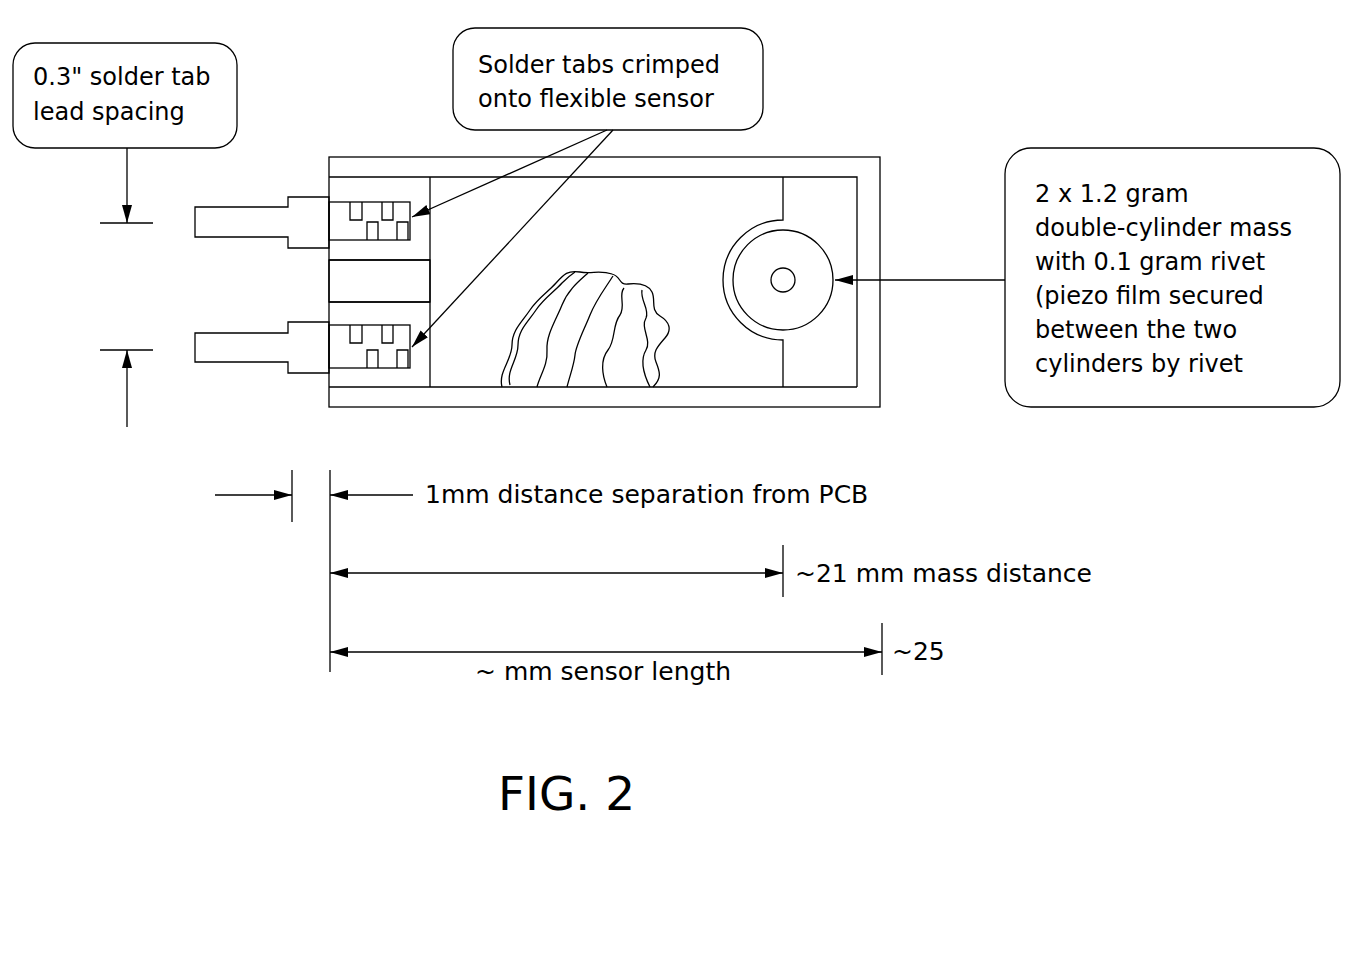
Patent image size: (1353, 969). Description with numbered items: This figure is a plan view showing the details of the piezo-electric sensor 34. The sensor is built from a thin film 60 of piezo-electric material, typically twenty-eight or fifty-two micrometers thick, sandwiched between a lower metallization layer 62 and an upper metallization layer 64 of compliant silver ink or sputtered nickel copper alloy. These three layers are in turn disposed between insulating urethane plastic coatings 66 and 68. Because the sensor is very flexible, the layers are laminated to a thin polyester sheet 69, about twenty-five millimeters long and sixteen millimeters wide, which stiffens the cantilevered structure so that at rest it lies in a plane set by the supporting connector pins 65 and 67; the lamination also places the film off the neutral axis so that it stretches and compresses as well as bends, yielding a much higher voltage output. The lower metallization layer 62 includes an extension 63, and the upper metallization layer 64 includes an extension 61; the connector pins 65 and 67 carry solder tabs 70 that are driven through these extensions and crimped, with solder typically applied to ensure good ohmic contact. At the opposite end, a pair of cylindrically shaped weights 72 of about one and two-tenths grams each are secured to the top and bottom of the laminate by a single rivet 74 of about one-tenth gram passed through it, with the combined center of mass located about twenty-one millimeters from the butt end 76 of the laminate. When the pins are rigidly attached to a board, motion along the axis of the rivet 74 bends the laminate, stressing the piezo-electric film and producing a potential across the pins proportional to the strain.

The piezo-electric sensor 34 is at (790, 157).
The extension of upper metallization layer 61 is at (375, 177).
The solder tabs 70 is at (352, 218).
The connector pin 65 is at (258, 240).
The butt end of the laminate 76 is at (329, 287).
The connector pin 67 is at (258, 364).
The extension of lower metallization layer 63 is at (357, 382).
The polyester sheet 69 is at (422, 410).
The insulating plastic coating 66 is at (520, 380).
The lower metallization layer 62 is at (550, 368).
The thin film of piezo-electric material 60 is at (597, 353).
The upper metallization layer 64 is at (640, 362).
The insulating plastic coating 68 is at (713, 389).
The rivet 74 is at (797, 263).
The cylindrically shaped weights 72 is at (828, 307).